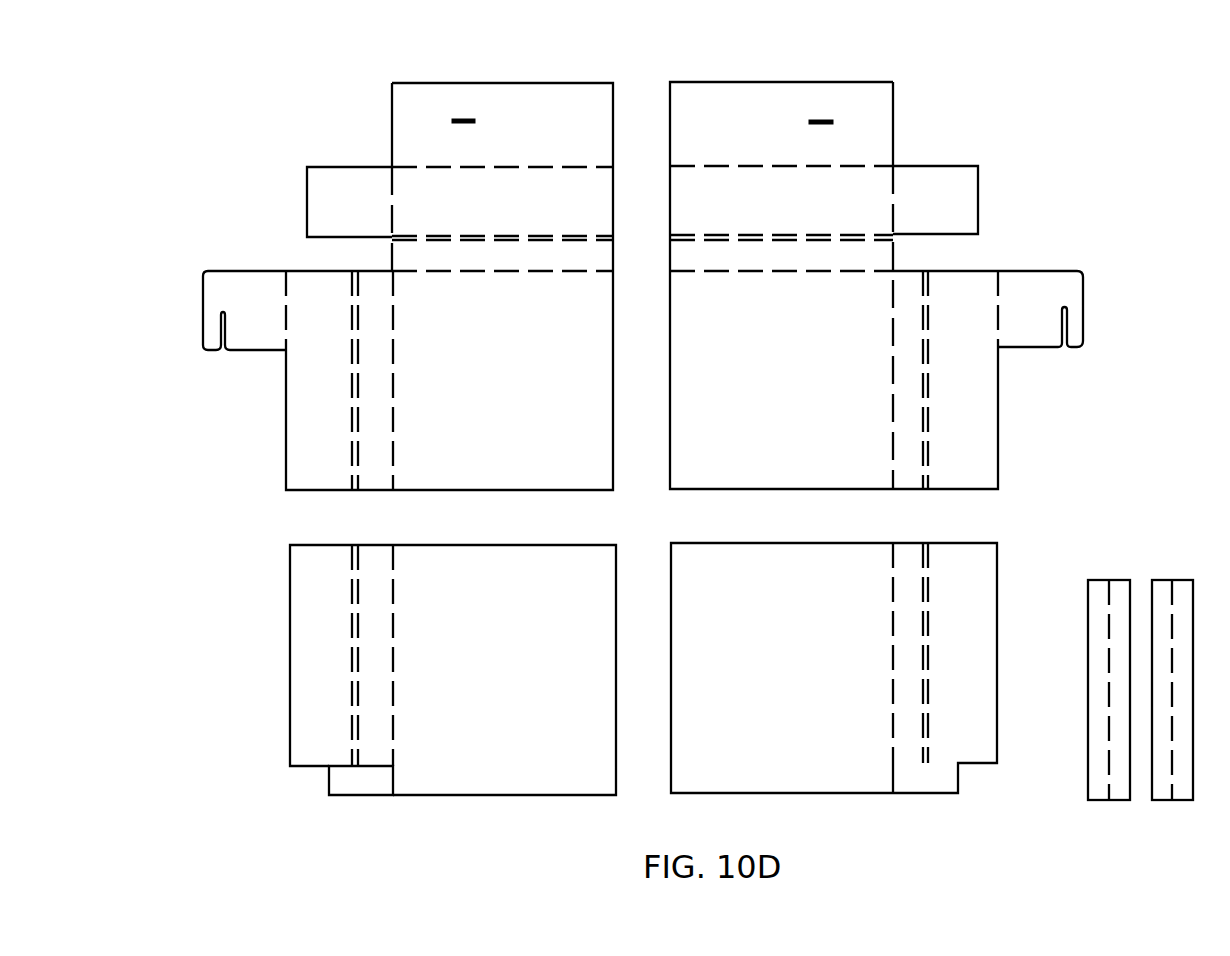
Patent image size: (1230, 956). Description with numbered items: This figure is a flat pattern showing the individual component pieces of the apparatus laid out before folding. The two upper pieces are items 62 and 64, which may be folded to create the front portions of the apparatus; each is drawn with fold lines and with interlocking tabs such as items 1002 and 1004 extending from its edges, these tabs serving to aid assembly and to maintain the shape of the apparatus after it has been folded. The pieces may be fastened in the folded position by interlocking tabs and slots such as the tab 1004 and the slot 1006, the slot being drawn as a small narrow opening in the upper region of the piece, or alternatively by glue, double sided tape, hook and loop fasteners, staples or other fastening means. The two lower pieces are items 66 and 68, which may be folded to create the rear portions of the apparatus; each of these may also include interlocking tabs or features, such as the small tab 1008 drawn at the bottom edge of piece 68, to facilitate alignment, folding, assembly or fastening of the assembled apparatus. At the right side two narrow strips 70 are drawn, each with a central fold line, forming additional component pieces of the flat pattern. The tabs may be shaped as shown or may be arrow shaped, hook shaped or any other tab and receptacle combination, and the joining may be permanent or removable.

The front portion piece 62 is at (485, 393).
The front portion piece 64 is at (763, 393).
The rear portion piece 66 is at (765, 680).
The rear portion piece 68 is at (476, 686).
The strips 70 is at (1117, 580).
The interlocking tab 1002 is at (336, 167).
The interlocking tab 1004 is at (218, 350).
The slot 1006 is at (458, 117).
The tab 1008 is at (329, 780).